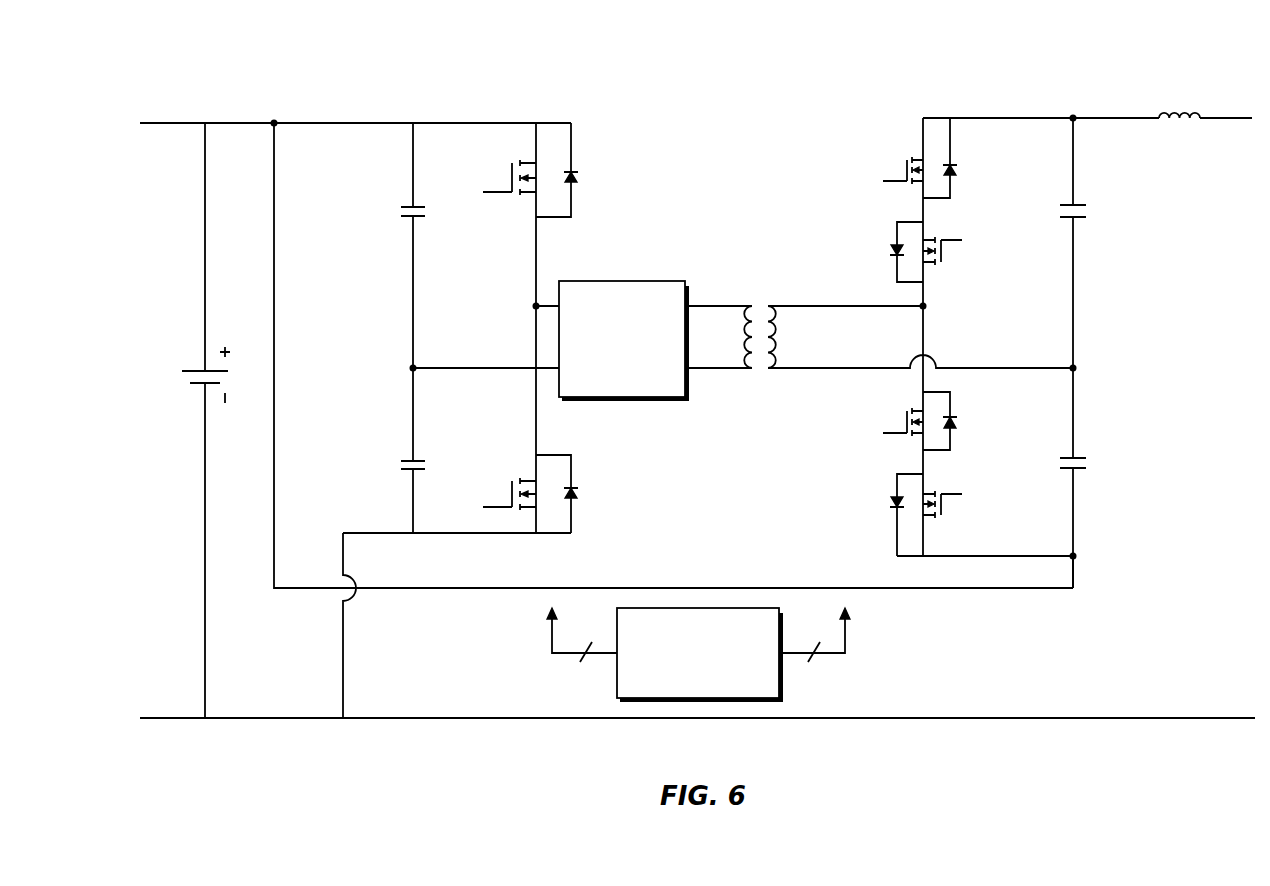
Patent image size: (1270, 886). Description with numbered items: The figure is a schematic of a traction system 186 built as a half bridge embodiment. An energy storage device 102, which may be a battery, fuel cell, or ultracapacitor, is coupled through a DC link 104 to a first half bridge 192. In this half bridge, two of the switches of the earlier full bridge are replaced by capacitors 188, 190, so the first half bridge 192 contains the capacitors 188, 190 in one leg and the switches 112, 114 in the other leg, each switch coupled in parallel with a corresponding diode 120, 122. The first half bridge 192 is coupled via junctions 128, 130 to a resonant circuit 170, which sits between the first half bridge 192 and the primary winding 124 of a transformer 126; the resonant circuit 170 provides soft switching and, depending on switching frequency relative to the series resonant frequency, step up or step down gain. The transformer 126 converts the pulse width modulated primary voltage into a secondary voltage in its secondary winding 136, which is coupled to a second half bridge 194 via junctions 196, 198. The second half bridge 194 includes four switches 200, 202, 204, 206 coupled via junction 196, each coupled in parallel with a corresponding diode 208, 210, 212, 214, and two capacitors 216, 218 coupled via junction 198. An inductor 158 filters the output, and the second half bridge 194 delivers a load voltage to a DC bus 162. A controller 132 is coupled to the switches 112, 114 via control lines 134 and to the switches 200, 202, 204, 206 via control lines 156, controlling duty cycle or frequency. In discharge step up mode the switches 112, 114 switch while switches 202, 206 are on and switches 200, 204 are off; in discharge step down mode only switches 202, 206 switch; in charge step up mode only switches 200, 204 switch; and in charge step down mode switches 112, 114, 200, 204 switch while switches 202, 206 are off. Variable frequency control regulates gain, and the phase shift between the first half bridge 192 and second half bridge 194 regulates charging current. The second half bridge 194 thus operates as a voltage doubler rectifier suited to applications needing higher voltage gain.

The energy storage device 102 is at (168, 388).
The DC link 104 is at (236, 122).
The switch 112 is at (487, 183).
The switch 114 is at (487, 495).
The diode 120 is at (630, 189).
The diode 122 is at (630, 501).
The primary winding 124 is at (736, 349).
The transformer 126 is at (780, 300).
The junction 128 is at (412, 366).
The junction 130 is at (534, 308).
The controller 132 is at (718, 679).
The control lines 134 is at (605, 692).
The secondary winding 136 is at (825, 349).
The control lines 156 is at (835, 692).
The inductor 158 is at (1198, 100).
The DC bus 162 is at (1205, 570).
The resonant circuit 170 is at (641, 376).
The traction system 186 is at (848, 57).
The capacitor 188 is at (390, 222).
The capacitor 190 is at (393, 475).
The first half bridge 192 is at (485, 103).
The second half bridge 194 is at (953, 95).
The junction 196 is at (925, 308).
The junction 198 is at (1075, 366).
The switch 200 is at (875, 180).
The switch 202 is at (1012, 256).
The switch 204 is at (875, 434).
The switch 206 is at (1012, 509).
The diode 208 is at (1005, 182).
The diode 210 is at (883, 258).
The diode 212 is at (1005, 432).
The diode 214 is at (883, 510).
The capacitor 216 is at (1135, 222).
The capacitor 218 is at (1135, 474).